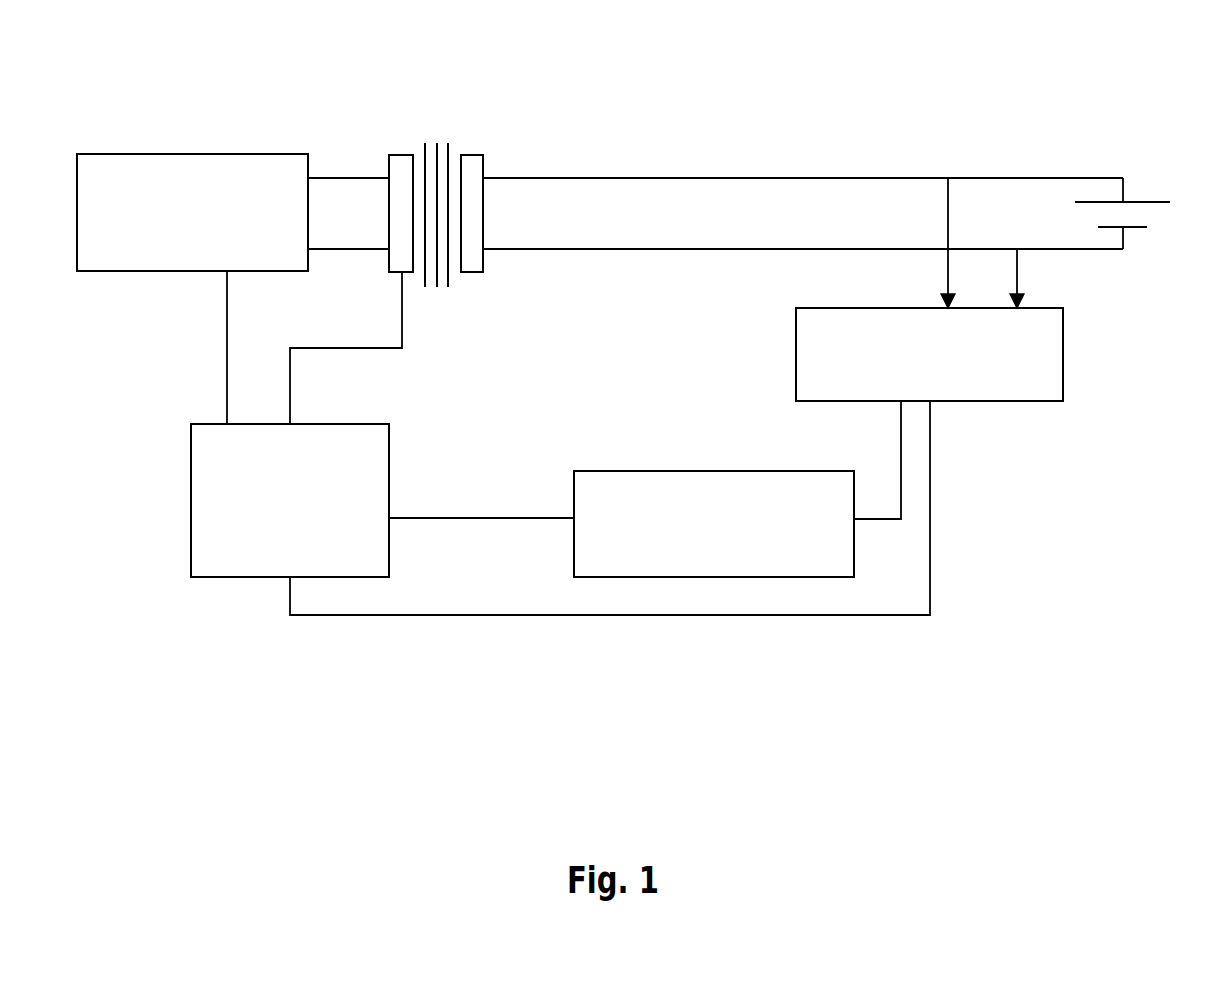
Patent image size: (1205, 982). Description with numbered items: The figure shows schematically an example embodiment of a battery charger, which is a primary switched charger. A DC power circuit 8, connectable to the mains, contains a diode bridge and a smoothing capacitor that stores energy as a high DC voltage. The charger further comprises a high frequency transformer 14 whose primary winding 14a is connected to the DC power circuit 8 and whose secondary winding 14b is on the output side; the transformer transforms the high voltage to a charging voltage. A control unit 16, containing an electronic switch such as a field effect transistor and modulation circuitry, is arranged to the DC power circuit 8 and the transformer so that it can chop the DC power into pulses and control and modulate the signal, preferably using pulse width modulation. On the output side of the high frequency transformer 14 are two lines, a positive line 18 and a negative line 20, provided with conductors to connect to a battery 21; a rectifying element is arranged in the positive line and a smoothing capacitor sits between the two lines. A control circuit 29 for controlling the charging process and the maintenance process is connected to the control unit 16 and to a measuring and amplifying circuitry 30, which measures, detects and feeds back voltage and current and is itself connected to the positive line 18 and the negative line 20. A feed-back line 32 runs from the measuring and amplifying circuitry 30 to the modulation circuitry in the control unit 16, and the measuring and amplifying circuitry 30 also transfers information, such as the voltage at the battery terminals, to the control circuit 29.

The DC power circuit 8 is at (192, 212).
The high frequency transformer 14 is at (420, 145).
The primary winding 14a is at (390, 170).
The secondary winding 14b is at (477, 155).
The control unit 16 is at (290, 500).
The positive line 18 is at (780, 178).
The negative line 20 is at (585, 250).
The battery 21 is at (1143, 214).
The control circuit 29 is at (714, 524).
The measuring and amplifying circuitry 30 is at (929, 354).
The feed-back line 32 is at (702, 615).